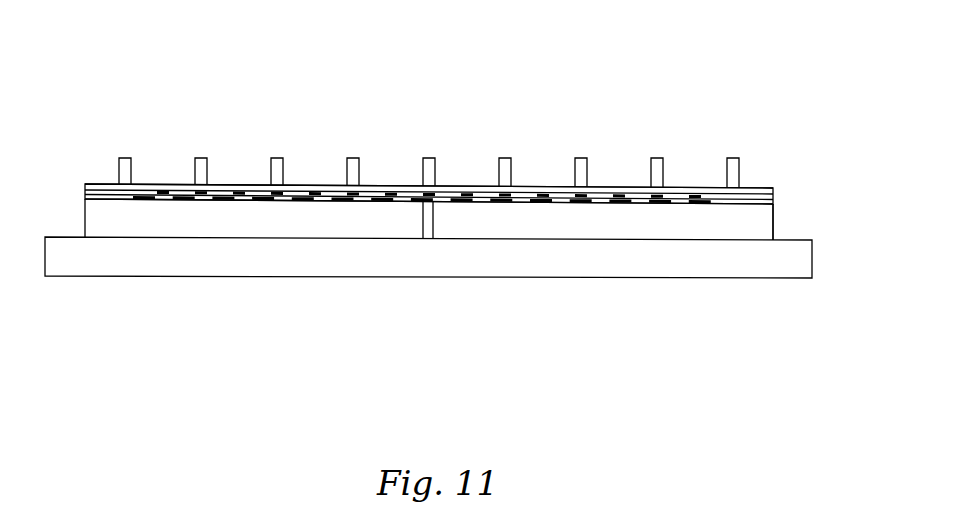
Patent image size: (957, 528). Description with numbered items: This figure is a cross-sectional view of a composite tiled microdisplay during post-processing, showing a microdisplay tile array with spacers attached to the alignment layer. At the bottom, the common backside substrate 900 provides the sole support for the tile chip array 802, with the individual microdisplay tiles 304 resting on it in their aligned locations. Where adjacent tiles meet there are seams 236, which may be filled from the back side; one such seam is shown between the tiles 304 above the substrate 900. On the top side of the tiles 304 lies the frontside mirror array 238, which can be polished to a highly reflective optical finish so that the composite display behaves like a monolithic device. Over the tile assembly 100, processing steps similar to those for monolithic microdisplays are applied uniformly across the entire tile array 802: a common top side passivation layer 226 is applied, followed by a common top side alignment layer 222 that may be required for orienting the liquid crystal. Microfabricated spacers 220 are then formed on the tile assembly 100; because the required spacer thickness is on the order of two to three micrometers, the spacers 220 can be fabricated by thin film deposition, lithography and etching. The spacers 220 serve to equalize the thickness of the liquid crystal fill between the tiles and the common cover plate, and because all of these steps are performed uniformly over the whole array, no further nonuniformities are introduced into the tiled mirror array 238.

The tile assembly 100 is at (770, 142).
The spacers 220 is at (429, 158).
The alignment layer 222 is at (377, 186).
The passivation layer 226 is at (605, 185).
The mirror array 238 is at (258, 188).
The seams 236 is at (427, 238).
The microdisplay tiles 304 is at (220, 224).
The tile chip array 802 is at (775, 223).
The common backside substrate 900 is at (484, 263).